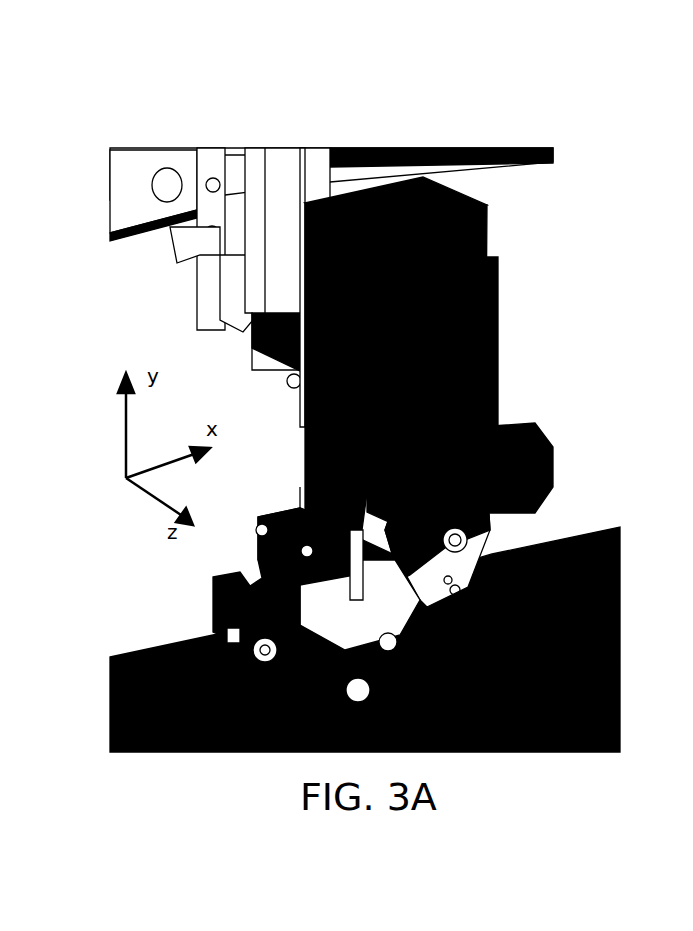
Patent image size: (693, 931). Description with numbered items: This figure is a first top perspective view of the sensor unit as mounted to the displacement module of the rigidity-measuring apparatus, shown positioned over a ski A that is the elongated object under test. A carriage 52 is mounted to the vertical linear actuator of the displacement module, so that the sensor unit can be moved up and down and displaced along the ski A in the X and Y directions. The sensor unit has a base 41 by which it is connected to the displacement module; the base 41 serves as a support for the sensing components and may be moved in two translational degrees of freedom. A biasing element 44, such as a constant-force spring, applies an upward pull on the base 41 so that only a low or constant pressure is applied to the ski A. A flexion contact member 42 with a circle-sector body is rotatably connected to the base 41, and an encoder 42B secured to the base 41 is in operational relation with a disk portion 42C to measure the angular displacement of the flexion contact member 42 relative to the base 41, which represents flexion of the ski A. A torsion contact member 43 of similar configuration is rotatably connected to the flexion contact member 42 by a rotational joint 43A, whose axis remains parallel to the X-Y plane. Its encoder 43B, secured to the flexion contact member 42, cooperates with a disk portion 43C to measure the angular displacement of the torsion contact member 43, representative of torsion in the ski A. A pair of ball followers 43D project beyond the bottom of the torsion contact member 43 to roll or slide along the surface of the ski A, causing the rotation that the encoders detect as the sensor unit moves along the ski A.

The carriage 52 is at (408, 150).
The base 41 is at (433, 320).
The biasing element 44 is at (497, 348).
The flexion contact member 42 is at (367, 583).
The torsion contact member 43 is at (369, 599).
The encoder 42B is at (480, 547).
The disk portion 42C is at (345, 540).
The rotational joint 43A is at (215, 610).
The encoder 43B is at (275, 520).
The disk portion 43C is at (258, 556).
The followers 43D is at (227, 630).
The ski A is at (622, 625).